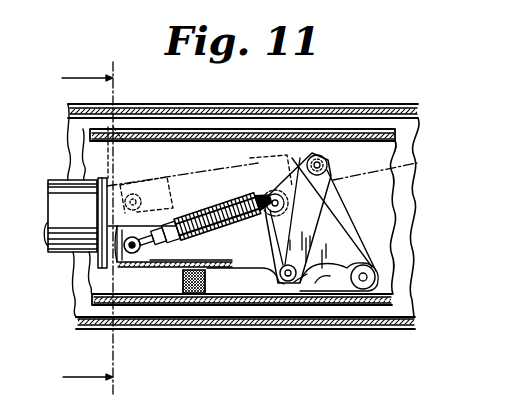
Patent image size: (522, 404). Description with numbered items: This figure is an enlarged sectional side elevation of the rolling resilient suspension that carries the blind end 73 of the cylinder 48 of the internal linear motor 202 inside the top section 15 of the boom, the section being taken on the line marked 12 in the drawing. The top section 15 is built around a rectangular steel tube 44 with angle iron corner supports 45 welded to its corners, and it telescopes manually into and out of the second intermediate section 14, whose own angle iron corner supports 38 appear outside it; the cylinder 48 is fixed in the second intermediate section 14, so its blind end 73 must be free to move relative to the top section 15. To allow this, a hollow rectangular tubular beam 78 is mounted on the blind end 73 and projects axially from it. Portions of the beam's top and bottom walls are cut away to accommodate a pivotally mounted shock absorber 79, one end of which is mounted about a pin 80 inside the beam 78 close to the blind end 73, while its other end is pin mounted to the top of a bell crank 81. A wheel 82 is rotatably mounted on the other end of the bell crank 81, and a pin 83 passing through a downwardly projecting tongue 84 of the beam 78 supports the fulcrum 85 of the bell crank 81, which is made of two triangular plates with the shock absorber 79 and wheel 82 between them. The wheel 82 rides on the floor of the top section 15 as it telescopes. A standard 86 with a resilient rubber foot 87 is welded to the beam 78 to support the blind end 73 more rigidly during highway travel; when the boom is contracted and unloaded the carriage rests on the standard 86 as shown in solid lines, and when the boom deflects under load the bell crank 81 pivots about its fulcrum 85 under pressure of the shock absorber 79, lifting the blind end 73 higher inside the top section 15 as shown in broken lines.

The foot section 12 is at (104, 228).
The second intermediate section 14 is at (298, 101).
The top section 15 is at (342, 126).
The angle iron corner supports 38 is at (266, 103).
The steel tube 44 is at (419, 125).
The angle iron corner supports 45 is at (386, 130).
The cylinder 48 is at (56, 257).
The blind end 73 is at (123, 128).
The tubular beam 78 is at (94, 204).
The shock absorber 79 is at (258, 163).
The pin 80 is at (140, 198).
The bell crank 81 is at (347, 247).
The wheel 82 is at (384, 264).
The pin 83 is at (284, 200).
The tongue 84 is at (276, 287).
The fulcrum 85 is at (291, 246).
The standard 86 is at (208, 272).
The resilient rubber foot 87 is at (201, 295).
The internal linear motor 202 is at (59, 173).